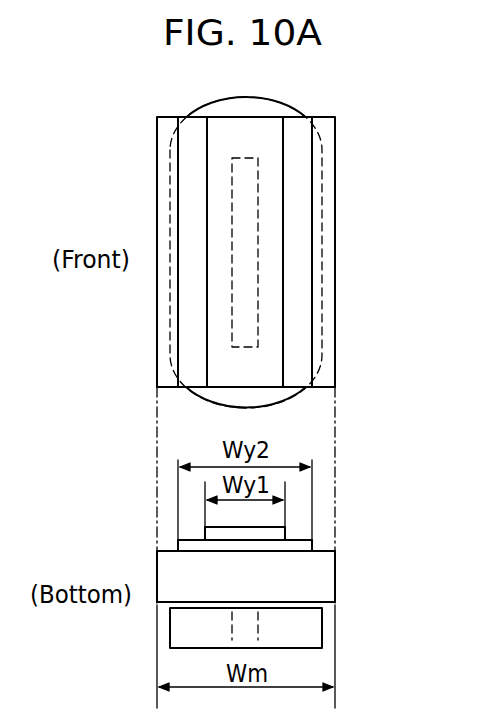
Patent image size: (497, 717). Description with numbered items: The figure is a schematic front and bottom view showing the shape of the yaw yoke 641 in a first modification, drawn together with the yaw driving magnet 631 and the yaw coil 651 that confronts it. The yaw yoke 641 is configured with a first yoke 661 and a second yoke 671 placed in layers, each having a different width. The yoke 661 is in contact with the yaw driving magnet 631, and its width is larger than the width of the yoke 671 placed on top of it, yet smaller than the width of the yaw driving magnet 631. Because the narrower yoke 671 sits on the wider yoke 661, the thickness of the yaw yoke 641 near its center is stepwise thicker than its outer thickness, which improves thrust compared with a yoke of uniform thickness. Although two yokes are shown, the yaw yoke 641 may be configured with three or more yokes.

The yaw driving magnet 631 is at (313, 583).
The yaw coil 651 is at (277, 627).
The yaw yoke 641 is at (167, 334).
The yoke 661 is at (192, 372).
The yoke 671 is at (220, 376).